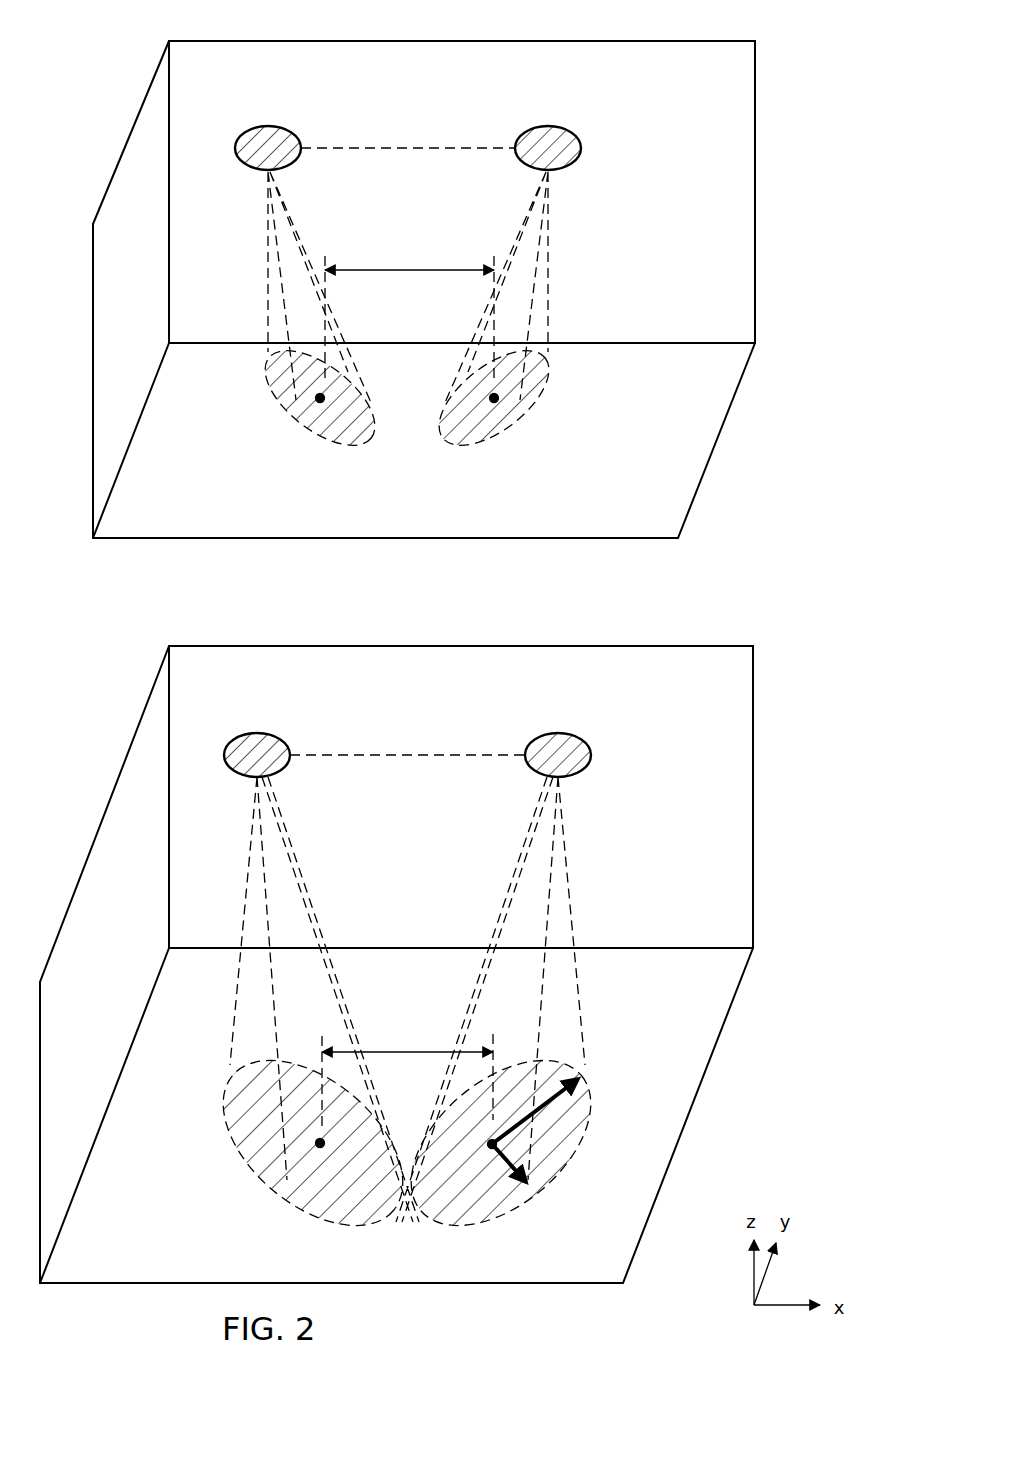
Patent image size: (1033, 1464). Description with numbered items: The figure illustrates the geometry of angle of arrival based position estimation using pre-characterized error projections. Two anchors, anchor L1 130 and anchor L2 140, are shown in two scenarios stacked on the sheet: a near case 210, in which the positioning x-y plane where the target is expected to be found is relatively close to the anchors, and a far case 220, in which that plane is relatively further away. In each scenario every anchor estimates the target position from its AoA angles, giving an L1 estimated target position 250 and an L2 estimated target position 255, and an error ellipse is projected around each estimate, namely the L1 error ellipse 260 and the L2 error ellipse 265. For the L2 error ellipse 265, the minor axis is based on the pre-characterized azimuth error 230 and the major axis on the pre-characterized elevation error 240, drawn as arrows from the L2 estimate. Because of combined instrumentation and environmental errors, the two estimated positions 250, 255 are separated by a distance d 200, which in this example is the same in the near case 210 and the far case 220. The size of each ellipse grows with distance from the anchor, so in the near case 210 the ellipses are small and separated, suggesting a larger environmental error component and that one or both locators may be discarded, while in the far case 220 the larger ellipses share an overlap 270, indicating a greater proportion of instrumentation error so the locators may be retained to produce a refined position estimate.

The anchor L1 130 is at (247, 733).
The anchor L2 140 is at (570, 732).
The distance d 200 is at (404, 1050).
The near case 210 is at (772, 106).
The far case 220 is at (782, 775).
The azimuth error 230 is at (505, 1162).
The elevation error 240 is at (583, 1127).
The estimated target position 250 is at (320, 398).
The estimated target position 255 is at (535, 1310).
The error ellipse 260 is at (292, 426).
The error ellipse 265 is at (523, 425).
The overlap 270 is at (394, 1208).